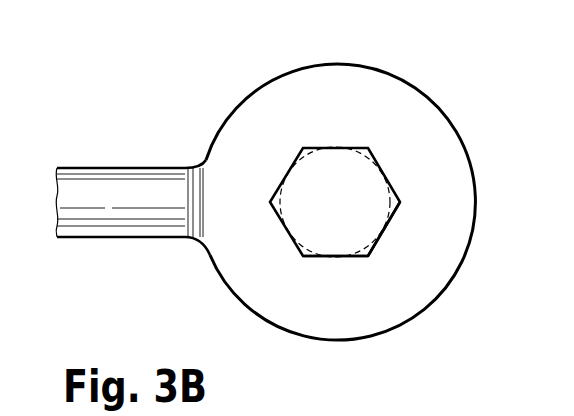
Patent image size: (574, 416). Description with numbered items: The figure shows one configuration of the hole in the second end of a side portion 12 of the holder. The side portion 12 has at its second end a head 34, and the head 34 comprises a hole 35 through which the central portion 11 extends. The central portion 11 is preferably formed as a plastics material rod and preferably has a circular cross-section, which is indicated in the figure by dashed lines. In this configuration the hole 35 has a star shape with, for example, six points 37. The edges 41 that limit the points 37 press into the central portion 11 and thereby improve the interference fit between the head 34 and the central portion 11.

The central portion 11 is at (372, 152).
The side portion 12 is at (80, 183).
The head 34 is at (245, 122).
The hole 35 is at (297, 258).
The points 37 is at (272, 202).
The edges 41 is at (398, 207).